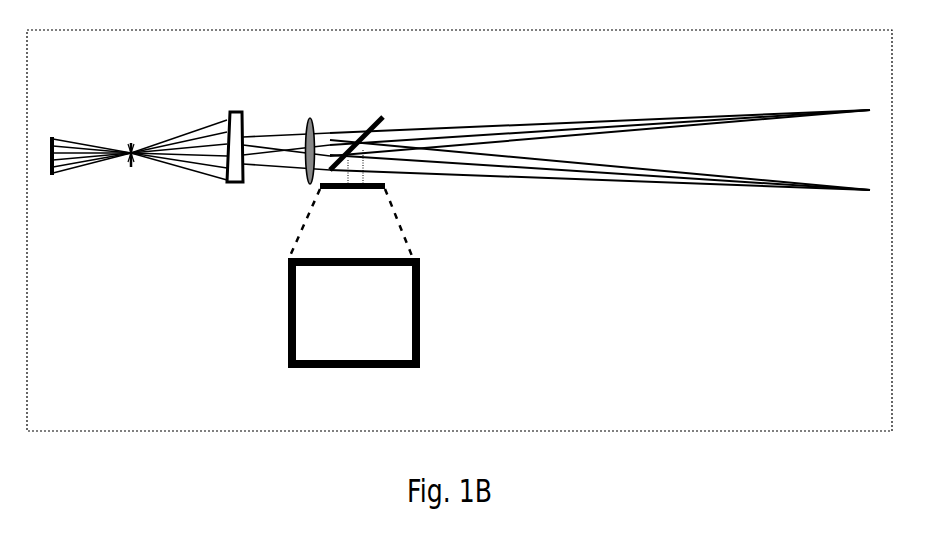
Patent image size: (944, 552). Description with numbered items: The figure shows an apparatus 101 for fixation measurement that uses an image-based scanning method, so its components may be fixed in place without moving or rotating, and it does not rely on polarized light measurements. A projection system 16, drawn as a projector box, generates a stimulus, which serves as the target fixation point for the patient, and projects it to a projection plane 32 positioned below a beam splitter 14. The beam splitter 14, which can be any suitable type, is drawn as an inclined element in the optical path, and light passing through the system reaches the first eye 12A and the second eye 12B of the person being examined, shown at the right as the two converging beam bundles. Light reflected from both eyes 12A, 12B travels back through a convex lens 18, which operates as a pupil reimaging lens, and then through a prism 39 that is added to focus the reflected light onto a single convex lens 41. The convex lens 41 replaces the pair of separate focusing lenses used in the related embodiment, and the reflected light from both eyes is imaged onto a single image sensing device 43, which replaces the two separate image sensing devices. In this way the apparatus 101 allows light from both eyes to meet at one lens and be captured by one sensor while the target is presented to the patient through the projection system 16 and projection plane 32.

The apparatus 101 is at (155, 432).
The image sensing device 43 is at (56, 138).
The convex lens 41 is at (135, 148).
The prism 39 is at (225, 181).
The convex lens 18 is at (314, 128).
The beam splitter 14 is at (386, 122).
The first eye 12A is at (864, 103).
The second eye 12B is at (866, 210).
The projection plane 32 is at (318, 191).
The projection system 16 is at (427, 338).